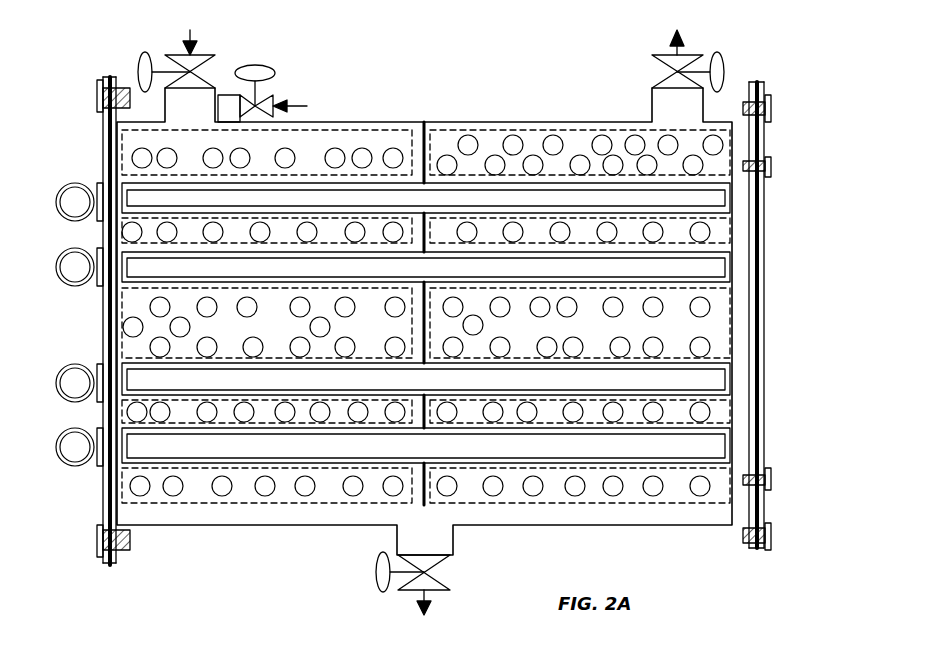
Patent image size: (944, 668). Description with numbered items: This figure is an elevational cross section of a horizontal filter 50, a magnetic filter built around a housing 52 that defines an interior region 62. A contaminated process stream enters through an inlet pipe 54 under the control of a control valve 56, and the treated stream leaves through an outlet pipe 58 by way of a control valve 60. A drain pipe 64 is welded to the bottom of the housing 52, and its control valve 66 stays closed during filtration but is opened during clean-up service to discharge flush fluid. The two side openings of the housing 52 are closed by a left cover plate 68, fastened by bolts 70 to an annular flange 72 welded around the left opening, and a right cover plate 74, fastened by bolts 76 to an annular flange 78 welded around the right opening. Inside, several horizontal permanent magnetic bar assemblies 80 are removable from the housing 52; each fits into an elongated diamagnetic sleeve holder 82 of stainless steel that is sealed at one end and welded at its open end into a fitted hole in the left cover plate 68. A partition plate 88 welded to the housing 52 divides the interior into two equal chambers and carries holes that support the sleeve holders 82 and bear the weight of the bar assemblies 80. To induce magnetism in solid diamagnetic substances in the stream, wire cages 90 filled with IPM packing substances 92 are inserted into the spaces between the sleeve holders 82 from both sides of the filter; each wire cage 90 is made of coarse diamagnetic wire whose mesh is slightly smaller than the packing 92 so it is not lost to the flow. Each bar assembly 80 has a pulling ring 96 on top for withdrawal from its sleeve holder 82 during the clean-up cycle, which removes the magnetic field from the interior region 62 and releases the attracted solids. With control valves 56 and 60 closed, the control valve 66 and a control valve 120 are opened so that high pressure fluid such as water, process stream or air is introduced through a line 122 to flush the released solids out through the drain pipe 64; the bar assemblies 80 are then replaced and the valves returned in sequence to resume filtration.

The horizontal filter 50 is at (80, 115).
The housing 52 is at (522, 122).
The inlet pipe 54 is at (193, 35).
The control valve 56 is at (138, 62).
The outlet pipe 58 is at (672, 52).
The control valve 60 is at (726, 68).
The interior region 62 is at (410, 130).
The drain pipe 64 is at (432, 590).
The control valve 66 is at (375, 568).
The left cover plate 68 is at (103, 328).
The bolts 70 is at (97, 540).
The annular flange 72 is at (112, 565).
The right cover plate 74 is at (765, 437).
The bolts 76 is at (771, 535).
The annular flange 78 is at (759, 370).
The permanent magnetic bar assembly 80 is at (237, 445).
The diamagnetic sleeve holder 82 is at (625, 463).
The partition plate 88 is at (426, 350).
The wire cage 90 is at (733, 315).
The IPM packing substances 92 is at (703, 496).
The pulling ring 96 is at (72, 184).
The control valve 120 is at (262, 64).
The line 122 is at (307, 106).